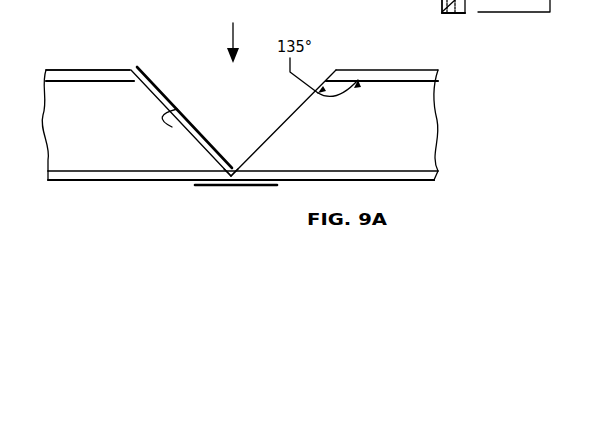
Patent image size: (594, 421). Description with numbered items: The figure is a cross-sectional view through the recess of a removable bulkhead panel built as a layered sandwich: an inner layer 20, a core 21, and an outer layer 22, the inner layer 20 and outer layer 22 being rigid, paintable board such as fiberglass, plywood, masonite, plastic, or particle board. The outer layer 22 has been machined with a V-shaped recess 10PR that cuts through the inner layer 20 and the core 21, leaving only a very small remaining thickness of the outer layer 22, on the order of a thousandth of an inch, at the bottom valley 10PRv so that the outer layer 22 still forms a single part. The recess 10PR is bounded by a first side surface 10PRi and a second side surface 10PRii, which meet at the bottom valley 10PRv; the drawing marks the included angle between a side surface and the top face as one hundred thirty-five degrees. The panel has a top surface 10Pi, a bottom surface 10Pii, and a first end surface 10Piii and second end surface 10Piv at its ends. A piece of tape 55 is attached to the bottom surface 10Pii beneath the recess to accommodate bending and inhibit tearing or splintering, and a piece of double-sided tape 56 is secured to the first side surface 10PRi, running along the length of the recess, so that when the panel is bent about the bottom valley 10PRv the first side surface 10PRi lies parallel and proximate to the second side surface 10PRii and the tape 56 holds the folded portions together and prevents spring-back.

The inner layer 20 is at (294, 78).
The core 21 is at (317, 120).
The outer layer 22 is at (297, 178).
The top surface of the panel 10Pi is at (100, 68).
The bottom surface of the panel 10Pii is at (405, 186).
The edge portion / light source side of the panel 10Piii is at (455, 14).
The panel portion 10Piv is at (440, 13).
The double-sided tape 56 is at (152, 73).
The tape 55 is at (258, 190).
The recess 10PR is at (232, 32).
The first reflected light ray portion 10PRi is at (184, 120).
The second reflected light ray portion 10PRii is at (294, 108).
The bottom valley 10PRv is at (222, 173).